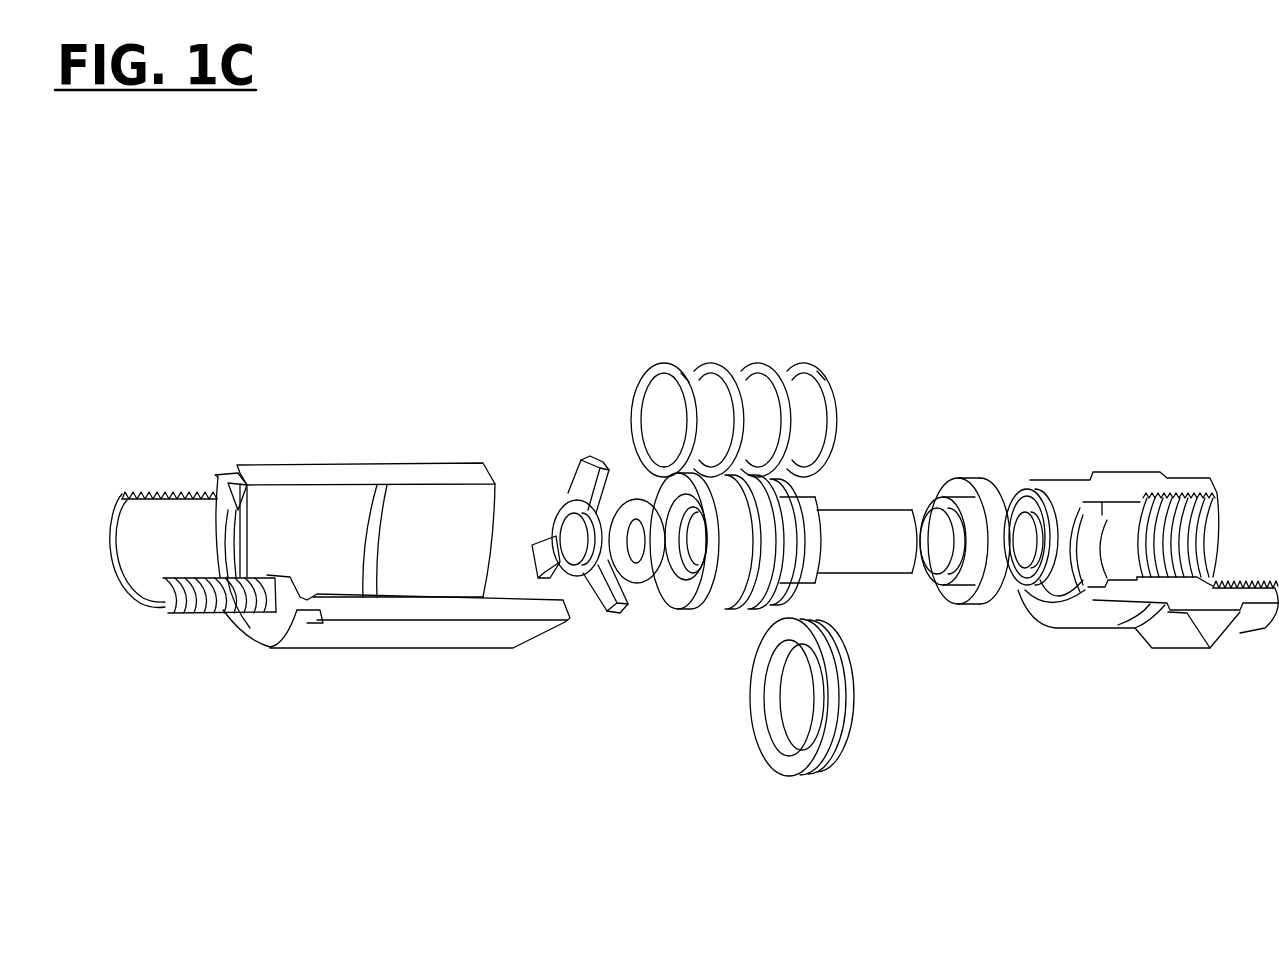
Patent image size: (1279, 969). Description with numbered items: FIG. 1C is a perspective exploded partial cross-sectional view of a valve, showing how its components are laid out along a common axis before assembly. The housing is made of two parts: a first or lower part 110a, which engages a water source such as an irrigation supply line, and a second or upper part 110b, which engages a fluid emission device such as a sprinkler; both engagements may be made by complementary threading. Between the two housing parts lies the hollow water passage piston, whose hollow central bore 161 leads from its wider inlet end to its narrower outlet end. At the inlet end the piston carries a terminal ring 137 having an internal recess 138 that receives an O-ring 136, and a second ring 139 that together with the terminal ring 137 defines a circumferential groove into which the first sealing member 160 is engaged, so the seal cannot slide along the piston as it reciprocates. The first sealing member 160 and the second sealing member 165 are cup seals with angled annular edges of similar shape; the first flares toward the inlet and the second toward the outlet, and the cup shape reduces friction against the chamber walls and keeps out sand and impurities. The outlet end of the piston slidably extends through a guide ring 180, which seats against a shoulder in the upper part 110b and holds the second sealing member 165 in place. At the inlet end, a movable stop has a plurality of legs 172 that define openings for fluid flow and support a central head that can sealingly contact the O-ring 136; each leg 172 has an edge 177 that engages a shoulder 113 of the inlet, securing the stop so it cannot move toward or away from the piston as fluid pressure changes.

The first part of housing 110a is at (388, 470).
The second part of housing 110b is at (1133, 485).
The shoulder 113 is at (258, 490).
The O-ring 136 is at (629, 499).
The terminal ring 137 is at (690, 597).
The internal recess 138 is at (681, 578).
The second ring 139 is at (767, 572).
The first sealing member 160 is at (853, 744).
The hollow central bore 161 is at (693, 540).
The second sealing member 165 is at (1027, 488).
The legs 172 is at (578, 497).
The edge 177 is at (600, 468).
The guide ring 180 is at (983, 488).